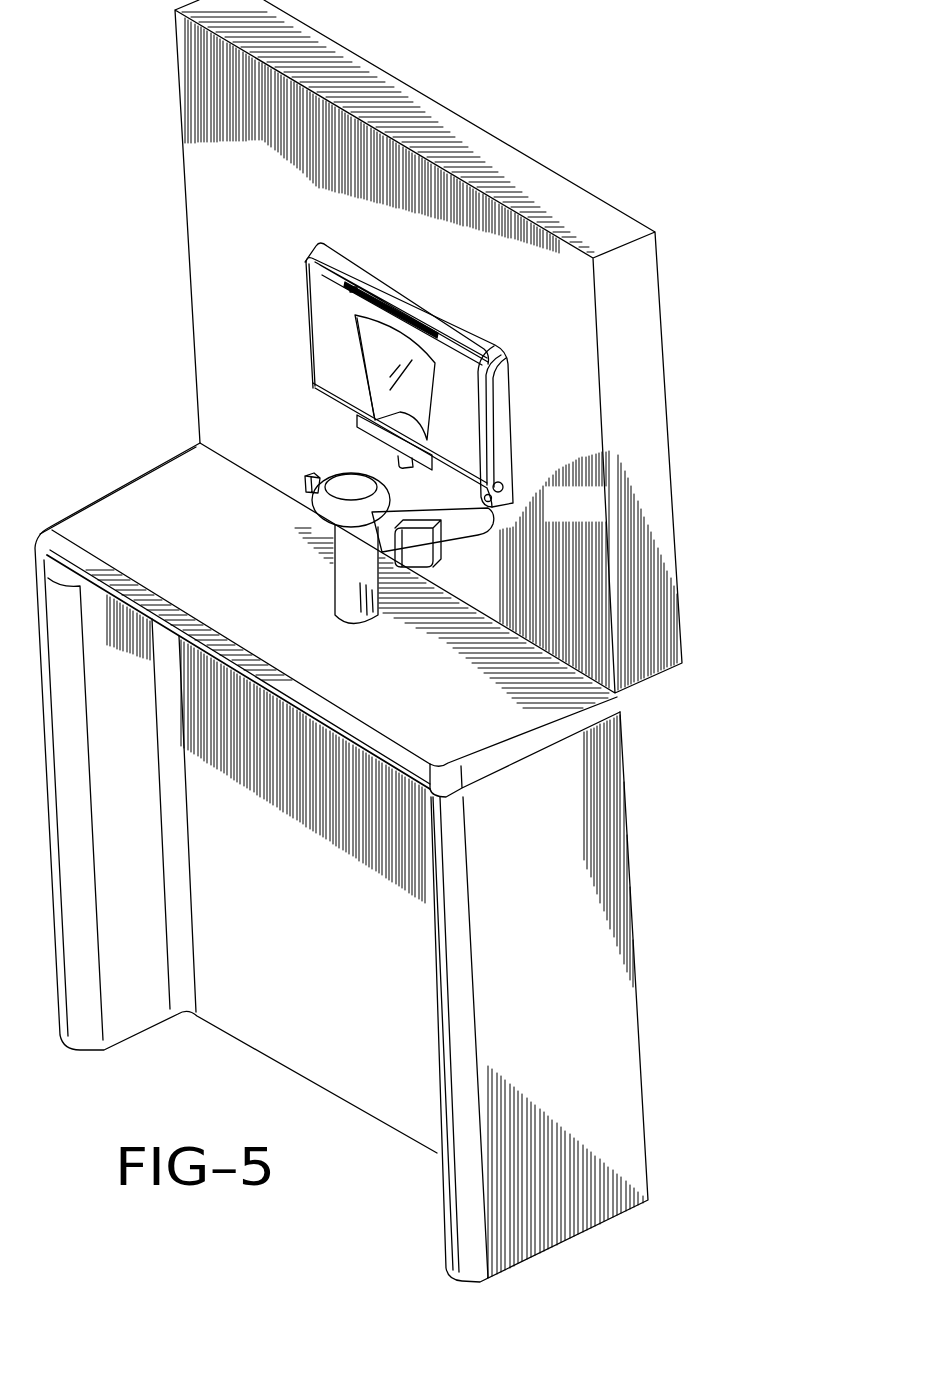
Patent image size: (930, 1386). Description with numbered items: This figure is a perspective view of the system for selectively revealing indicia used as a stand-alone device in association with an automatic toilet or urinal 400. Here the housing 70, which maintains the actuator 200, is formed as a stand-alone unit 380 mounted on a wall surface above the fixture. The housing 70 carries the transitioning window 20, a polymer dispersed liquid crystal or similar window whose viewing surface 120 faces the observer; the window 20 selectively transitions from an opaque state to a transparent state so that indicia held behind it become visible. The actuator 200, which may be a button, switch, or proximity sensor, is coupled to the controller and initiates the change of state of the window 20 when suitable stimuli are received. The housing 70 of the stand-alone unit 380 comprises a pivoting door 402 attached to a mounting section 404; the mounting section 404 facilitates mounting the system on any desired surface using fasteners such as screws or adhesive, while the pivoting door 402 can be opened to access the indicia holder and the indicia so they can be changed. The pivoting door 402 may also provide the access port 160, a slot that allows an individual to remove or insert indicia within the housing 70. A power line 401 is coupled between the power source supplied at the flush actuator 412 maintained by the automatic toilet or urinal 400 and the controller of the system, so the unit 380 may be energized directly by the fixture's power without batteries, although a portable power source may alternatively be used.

The automatic toilet or urinal 400 is at (614, 1060).
The housing 70 is at (417, 360).
The transitioning window 20 is at (369, 335).
The viewing surface 120 is at (372, 367).
The access port 160 is at (403, 313).
The actuator 200 is at (370, 427).
The stand-alone unit 380 is at (507, 357).
The power line 401 is at (477, 517).
The pivoting door 402 is at (317, 302).
The mounting section 404 is at (450, 327).
The flush actuator 412 is at (345, 490).